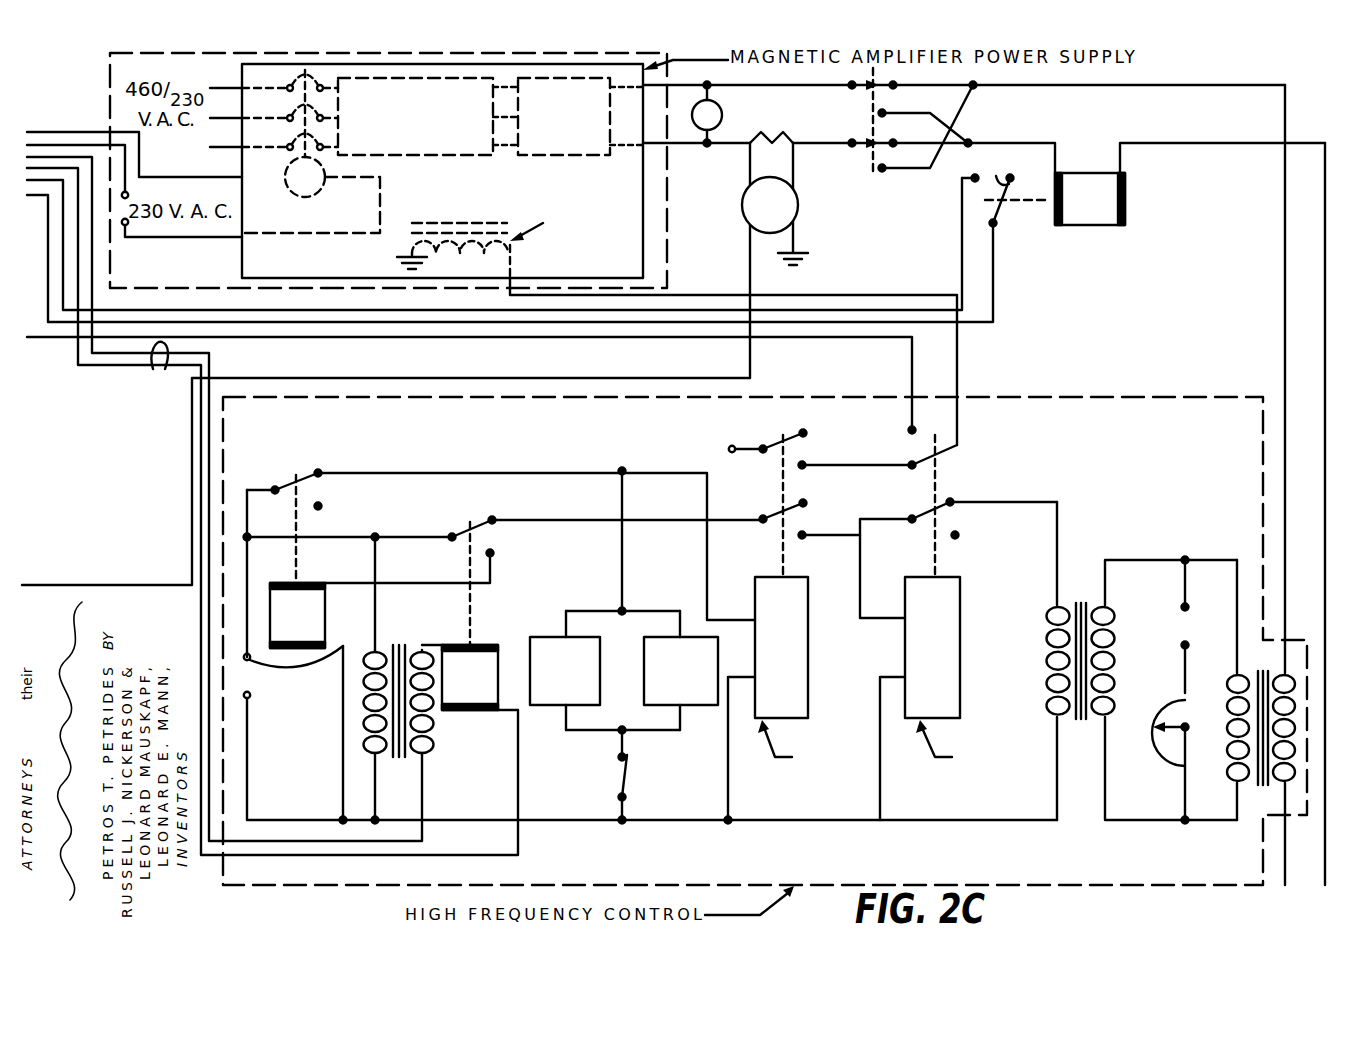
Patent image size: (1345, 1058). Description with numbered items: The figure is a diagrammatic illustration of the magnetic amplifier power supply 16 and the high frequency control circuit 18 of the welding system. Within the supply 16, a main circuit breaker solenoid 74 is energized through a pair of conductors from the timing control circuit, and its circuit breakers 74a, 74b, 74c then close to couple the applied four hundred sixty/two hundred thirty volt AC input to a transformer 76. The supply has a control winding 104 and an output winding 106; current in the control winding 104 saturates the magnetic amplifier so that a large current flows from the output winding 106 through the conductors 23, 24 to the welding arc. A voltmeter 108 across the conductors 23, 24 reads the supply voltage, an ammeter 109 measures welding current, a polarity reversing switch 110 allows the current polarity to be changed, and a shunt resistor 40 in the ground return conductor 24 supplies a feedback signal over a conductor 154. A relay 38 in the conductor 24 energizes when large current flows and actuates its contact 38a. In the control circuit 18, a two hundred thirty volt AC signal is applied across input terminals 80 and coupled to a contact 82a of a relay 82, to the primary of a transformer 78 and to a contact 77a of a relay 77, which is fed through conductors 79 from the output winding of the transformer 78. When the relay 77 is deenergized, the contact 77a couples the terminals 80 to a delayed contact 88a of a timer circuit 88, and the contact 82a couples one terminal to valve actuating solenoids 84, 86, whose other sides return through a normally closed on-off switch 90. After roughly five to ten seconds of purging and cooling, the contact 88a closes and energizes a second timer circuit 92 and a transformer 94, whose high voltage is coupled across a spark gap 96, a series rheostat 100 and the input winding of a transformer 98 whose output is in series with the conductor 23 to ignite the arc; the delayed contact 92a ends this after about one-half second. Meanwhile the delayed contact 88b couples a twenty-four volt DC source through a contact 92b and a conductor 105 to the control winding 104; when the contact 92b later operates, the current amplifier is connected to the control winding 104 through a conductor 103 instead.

The magnetic amplifier power supply 16 is at (108, 87).
The high frequency control circuit 18 is at (262, 890).
The conductor 23 is at (1285, 296).
The ground return conductor 24 is at (1318, 143).
The relay 38 is at (1104, 229).
The "C" contact 38a is at (1024, 171).
The shunt resistor 40 is at (751, 152).
The main circuit breaker solenoid 74 is at (312, 200).
The circuit breaker 74a is at (290, 93).
The circuit breaker 74b is at (290, 123).
The circuit breaker 74c is at (290, 152).
The transformer 76 is at (472, 157).
The relay 77 is at (487, 645).
The "C" contact 77a is at (508, 509).
The transformer 78 is at (418, 645).
The conductors 79 is at (151, 374).
The input terminals 80 is at (343, 645).
The relay 82 is at (309, 582).
The "C" contact 82a is at (289, 484).
The valve actuating solenoid 84 is at (551, 637).
The valve actuating solenoid 86 is at (693, 637).
The timer circuit 88 is at (808, 595).
The delayed operation "C" contact 88a is at (771, 516).
The "C" contact 88b is at (789, 438).
The on-off switch 90 is at (621, 782).
The timer circuit 92 is at (962, 590).
The delayed operation "C" contact 92a is at (1008, 540).
The "C" contact 92b is at (1006, 456).
The transformer 94 is at (1086, 600).
The spark gap 96 is at (1181, 614).
The transformer 98 is at (1258, 788).
The rheostat 100 is at (1181, 693).
The conductor 103 is at (862, 338).
The control winding 104 is at (512, 246).
The conductor 105 is at (960, 365).
The output winding 106 is at (588, 158).
The voltmeter 108 is at (722, 113).
The ammeter 109 is at (799, 205).
The polarity reversing switch 110 is at (870, 112).
The conductor 154 is at (357, 373).